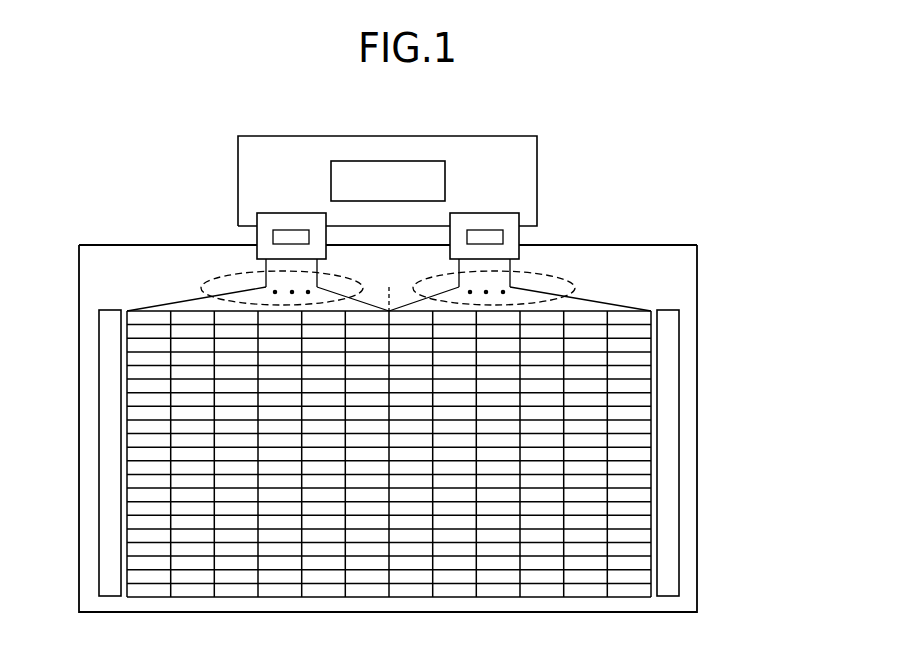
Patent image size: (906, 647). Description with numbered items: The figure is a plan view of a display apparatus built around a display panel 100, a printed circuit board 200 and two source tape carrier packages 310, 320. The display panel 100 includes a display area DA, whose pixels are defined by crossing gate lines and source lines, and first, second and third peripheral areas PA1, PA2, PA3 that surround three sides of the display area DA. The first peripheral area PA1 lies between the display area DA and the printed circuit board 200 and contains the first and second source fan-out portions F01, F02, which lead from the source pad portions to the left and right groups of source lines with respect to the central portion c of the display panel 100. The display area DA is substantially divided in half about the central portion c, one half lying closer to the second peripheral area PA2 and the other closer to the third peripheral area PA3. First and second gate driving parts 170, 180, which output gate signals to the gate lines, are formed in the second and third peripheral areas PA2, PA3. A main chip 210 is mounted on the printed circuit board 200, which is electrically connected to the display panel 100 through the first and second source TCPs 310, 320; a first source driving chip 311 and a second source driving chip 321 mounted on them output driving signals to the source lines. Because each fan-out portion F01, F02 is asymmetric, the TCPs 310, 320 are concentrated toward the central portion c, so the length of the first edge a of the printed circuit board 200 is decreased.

The display panel 100 is at (697, 282).
The first gate driving part 170 is at (103, 498).
The second gate driving part 180 is at (672, 498).
The printed circuit board 200 is at (527, 188).
The main chip 210 is at (433, 178).
The first source tape carrier package 310 is at (268, 223).
The first source driving chip 311 is at (273, 235).
The second source tape carrier package 320 is at (508, 222).
The second source driving chip 321 is at (502, 237).
The first peripheral area PA1 is at (646, 255).
The second peripheral area PA2 is at (87, 445).
The third peripheral area PA3 is at (690, 445).
The display area DA is at (400, 456).
The first source fan-out portion F01 is at (208, 287).
The second source fan-out portion F02 is at (572, 283).
The first edge of the PCB a is at (537, 109).
The central portion c is at (388, 288).